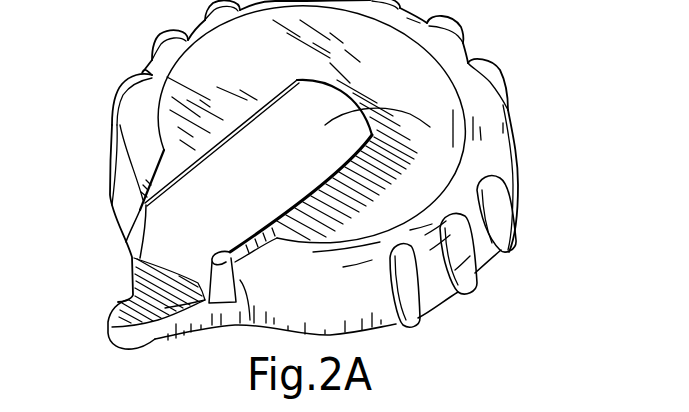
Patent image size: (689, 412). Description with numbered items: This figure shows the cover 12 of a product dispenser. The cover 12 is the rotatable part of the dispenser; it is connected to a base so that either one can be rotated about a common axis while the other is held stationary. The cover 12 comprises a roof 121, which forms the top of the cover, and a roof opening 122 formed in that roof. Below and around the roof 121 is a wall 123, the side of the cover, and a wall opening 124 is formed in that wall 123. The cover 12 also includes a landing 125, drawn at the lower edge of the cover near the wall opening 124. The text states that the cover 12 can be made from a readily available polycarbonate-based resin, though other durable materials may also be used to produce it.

The cover 12 is at (305, 174).
The roof 121 is at (430, 160).
The roof opening 122 is at (430, 127).
The wall 123 is at (130, 150).
The wall opening 124 is at (128, 246).
The landing 125 is at (128, 300).